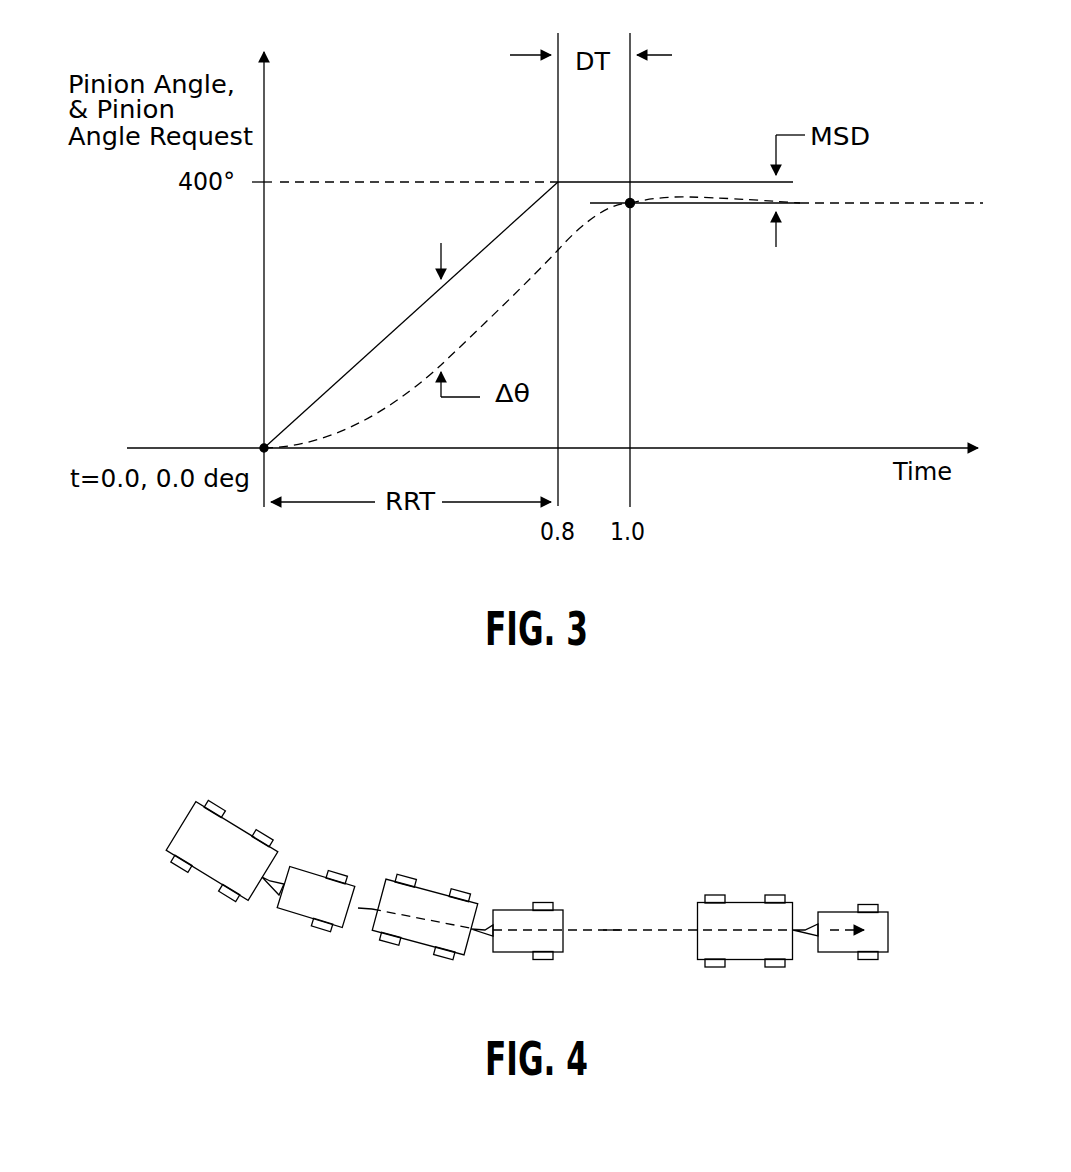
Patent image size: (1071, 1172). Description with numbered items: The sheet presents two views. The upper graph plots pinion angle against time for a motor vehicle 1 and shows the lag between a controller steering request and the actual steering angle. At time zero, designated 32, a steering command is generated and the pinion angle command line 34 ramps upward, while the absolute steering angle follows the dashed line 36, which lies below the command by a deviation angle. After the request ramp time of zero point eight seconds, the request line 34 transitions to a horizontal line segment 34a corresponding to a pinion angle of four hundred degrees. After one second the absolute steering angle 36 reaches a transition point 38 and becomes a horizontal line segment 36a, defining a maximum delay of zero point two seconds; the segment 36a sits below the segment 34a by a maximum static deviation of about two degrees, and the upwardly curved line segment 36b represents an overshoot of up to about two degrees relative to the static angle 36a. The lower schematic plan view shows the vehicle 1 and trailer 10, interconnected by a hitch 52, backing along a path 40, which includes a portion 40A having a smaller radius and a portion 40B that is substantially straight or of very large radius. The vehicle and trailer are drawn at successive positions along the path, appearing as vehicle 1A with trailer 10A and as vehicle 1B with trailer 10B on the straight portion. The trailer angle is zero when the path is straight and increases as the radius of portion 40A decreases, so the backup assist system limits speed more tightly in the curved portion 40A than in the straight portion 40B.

In FIG. 3, the steering command start point 32 is at (262, 446).
In FIG. 3, the pinion angle command line 34 is at (370, 352).
In FIG. 3, the absolute steering angle line 36 is at (518, 288).
In FIG. 3, the transition point 38 is at (632, 205).
In FIG. 3, the horizontal line segment of pinion angle request 34a is at (709, 182).
In FIG. 3, the horizontal line segment of absolute steering angle 36a is at (840, 204).
In FIG. 3, the upwardly curved line segment 36b is at (687, 197).
In FIG. 4, the motor vehicle 1 is at (209, 878).
In FIG. 4, the hitch 52 is at (268, 883).
In FIG. 4, the trailer 10 is at (302, 913).
In FIG. 4, the path portion having a smaller radius 40A is at (368, 905).
In FIG. 4, the vehicle at intermediate position 1A is at (414, 945).
In FIG. 4, the trailer at intermediate position 10A is at (512, 955).
In FIG. 4, the path 40 is at (633, 933).
In FIG. 4, the substantially straight path portion 40B is at (616, 927).
In FIG. 4, the vehicle at final position 1B is at (745, 963).
In FIG. 4, the trailer at final position 10B is at (843, 955).